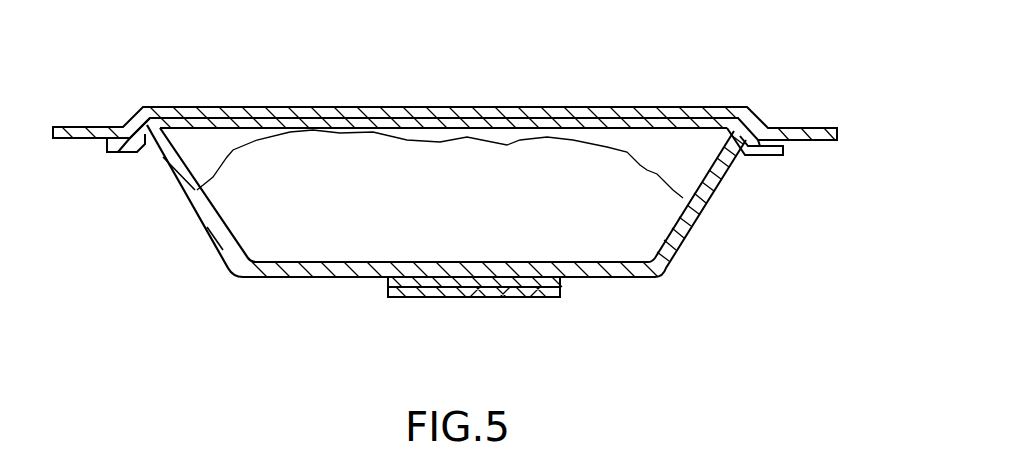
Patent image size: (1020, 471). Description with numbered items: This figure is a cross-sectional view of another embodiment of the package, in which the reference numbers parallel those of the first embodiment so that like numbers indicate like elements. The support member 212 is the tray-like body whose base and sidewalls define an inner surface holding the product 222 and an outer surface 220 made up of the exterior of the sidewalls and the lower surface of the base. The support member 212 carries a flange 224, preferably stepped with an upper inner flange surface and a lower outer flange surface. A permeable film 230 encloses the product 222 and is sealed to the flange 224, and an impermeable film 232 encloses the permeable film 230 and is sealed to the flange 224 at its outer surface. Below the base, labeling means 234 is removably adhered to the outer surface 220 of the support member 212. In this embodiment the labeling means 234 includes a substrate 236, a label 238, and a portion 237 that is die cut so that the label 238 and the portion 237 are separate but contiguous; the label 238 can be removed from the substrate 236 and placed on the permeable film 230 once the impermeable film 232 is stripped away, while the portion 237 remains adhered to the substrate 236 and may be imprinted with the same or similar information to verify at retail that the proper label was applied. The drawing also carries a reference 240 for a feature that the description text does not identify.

The support member 212 is at (683, 243).
The outer surface 220 is at (257, 278).
The product 222 is at (498, 183).
The flange 224 is at (790, 147).
The permeable film 230 is at (422, 107).
The impermeable film 232 is at (340, 107).
The labeling means 234 is at (548, 298).
The substrate 236 is at (378, 280).
The remaining portion 237 is at (430, 288).
The label 238 is at (505, 290).
The adhesive layer 240 is at (386, 291).